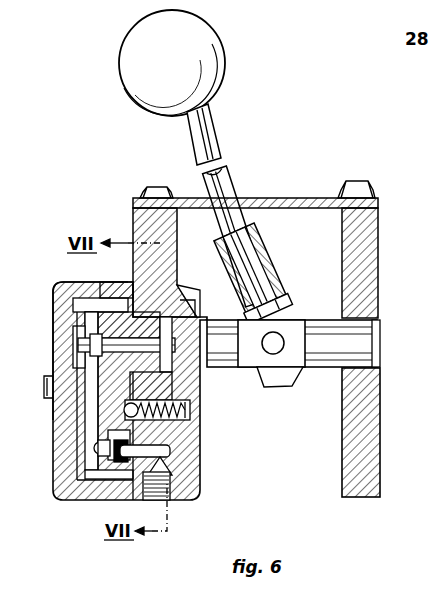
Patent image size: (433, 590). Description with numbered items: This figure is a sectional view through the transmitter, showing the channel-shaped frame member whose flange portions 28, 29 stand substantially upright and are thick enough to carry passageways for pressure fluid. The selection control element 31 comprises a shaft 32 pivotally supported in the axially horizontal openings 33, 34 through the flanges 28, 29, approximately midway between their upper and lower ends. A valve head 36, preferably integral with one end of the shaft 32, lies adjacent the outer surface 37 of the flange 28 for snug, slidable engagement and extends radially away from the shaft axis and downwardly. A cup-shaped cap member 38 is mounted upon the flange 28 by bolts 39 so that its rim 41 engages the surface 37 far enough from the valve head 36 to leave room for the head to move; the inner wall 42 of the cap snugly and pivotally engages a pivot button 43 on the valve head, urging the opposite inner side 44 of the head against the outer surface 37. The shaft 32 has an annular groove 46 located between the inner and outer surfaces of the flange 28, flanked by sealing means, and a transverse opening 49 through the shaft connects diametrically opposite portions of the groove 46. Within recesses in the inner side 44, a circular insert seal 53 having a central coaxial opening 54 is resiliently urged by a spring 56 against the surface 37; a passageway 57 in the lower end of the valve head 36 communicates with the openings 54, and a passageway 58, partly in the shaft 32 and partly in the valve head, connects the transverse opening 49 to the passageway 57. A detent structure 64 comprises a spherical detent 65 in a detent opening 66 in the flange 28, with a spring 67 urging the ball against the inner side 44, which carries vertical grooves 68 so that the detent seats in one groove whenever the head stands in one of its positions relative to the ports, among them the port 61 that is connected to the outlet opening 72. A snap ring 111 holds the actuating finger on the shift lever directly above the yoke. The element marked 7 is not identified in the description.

The snap ring 111 is at (244, 228).
The flange portion 29 is at (360, 253).
The selection control element 31 is at (284, 279).
The flange portion 28 is at (201, 445).
The cup-shaped cap member 38 is at (58, 313).
The inner wall 42 is at (72, 305).
The rim 41 is at (116, 290).
The valve head 36 is at (90, 312).
The passageway 58 is at (100, 420).
The pivot button 43 is at (75, 344).
The inner side 44 is at (133, 378).
The annular groove 46 is at (166, 360).
The transverse opening 49 is at (200, 318).
The bolts 39 is at (44, 386).
The vertical grooves 68 is at (108, 440).
The central coaxial opening 54 is at (112, 448).
The passageway 57 is at (94, 451).
The spring 56 is at (112, 458).
The circular insert seal 53 is at (133, 497).
The outer surface 37 is at (140, 492).
The spherical detent 65 is at (165, 395).
The detent structure 64 is at (185, 423).
The detent opening 66 is at (138, 409).
The spring 67 is at (187, 408).
The port 61 is at (158, 462).
The outlet opening 72 is at (167, 493).
The shaft 32 is at (331, 334).
The opening 34 is at (380, 318).
The opening 33 is at (267, 355).
The post 7 is at (387, 320).